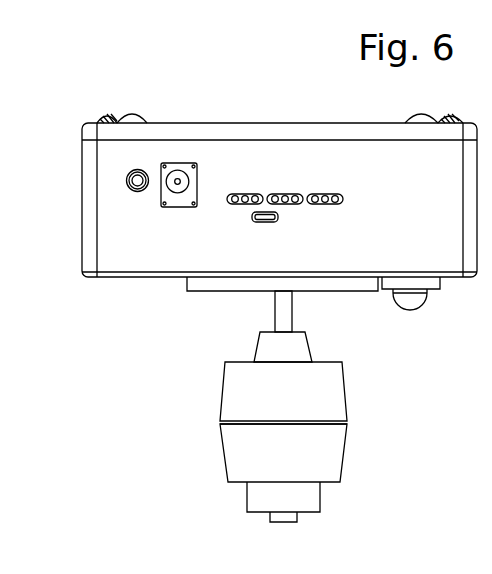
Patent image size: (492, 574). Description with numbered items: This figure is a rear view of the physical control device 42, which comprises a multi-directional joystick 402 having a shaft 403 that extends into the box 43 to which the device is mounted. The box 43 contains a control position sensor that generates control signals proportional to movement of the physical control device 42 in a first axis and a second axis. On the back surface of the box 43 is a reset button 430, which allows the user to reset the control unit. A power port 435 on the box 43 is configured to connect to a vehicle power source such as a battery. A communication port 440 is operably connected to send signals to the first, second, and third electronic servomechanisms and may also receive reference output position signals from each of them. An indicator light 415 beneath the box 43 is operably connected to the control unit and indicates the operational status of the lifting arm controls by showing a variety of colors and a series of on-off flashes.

The box 43 is at (83, 205).
The reset button 430 is at (131, 191).
The power port 435 is at (183, 163).
The communication port 440 is at (320, 196).
The shaft 403 is at (277, 305).
The indicator light 415 is at (433, 289).
The physical control device 42 is at (315, 427).
The multi-directional joystick 402 is at (223, 442).